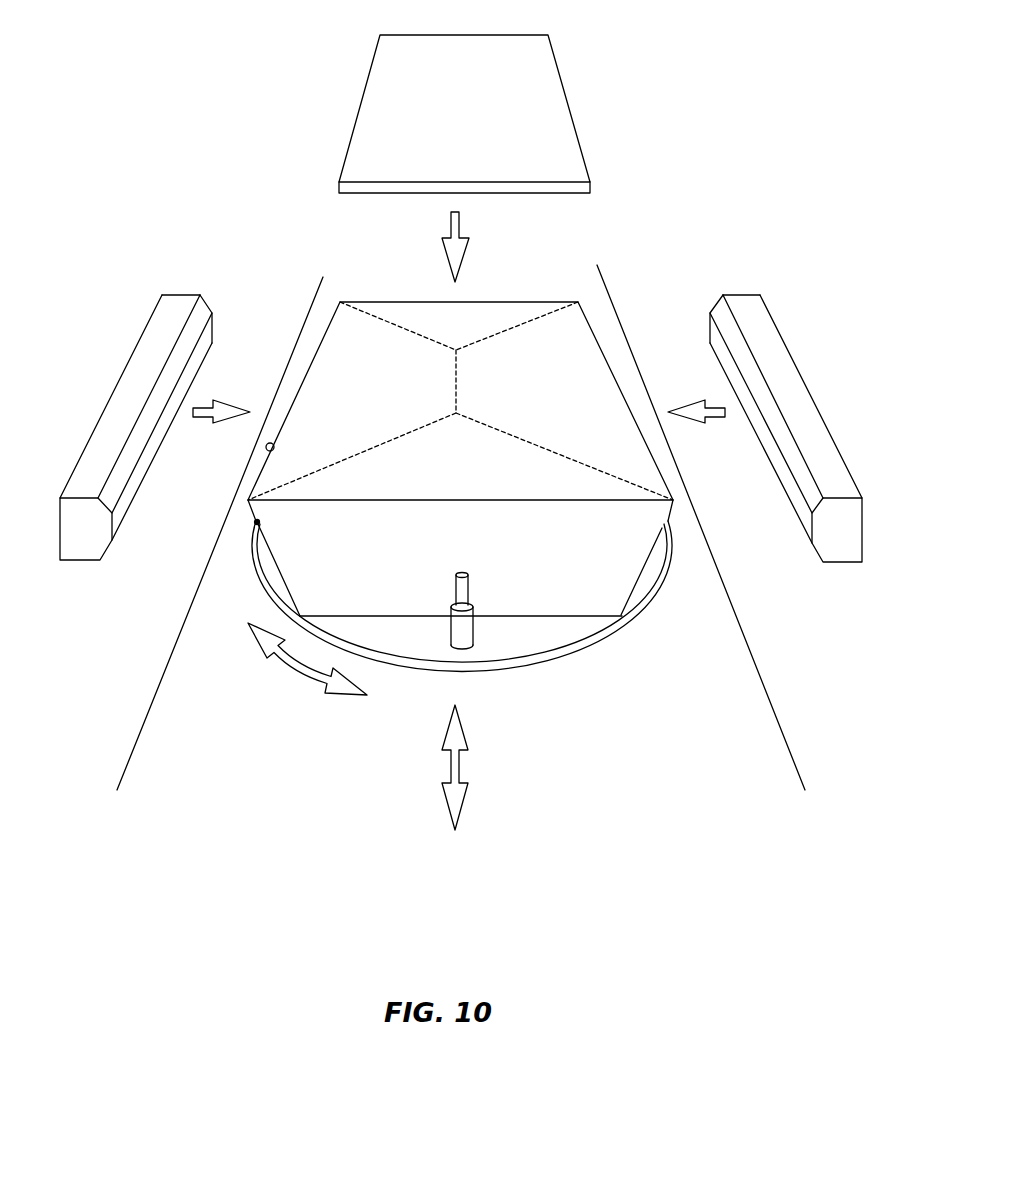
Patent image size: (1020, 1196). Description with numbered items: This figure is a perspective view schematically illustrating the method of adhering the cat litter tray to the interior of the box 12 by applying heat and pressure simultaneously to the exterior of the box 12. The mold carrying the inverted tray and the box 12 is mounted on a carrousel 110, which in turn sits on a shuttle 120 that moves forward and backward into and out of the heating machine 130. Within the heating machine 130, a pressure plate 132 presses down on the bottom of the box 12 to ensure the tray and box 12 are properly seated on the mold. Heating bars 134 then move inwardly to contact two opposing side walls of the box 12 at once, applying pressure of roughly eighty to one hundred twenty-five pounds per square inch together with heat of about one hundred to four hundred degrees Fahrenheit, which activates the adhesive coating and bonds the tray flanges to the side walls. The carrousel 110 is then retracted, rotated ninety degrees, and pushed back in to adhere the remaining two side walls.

The box 12 is at (510, 300).
The carrousel 110 is at (512, 676).
The shuttle 120 is at (640, 707).
The heating machine 130 is at (654, 224).
The pressure plate 132 is at (447, 122).
The heating bars 134 is at (140, 378).